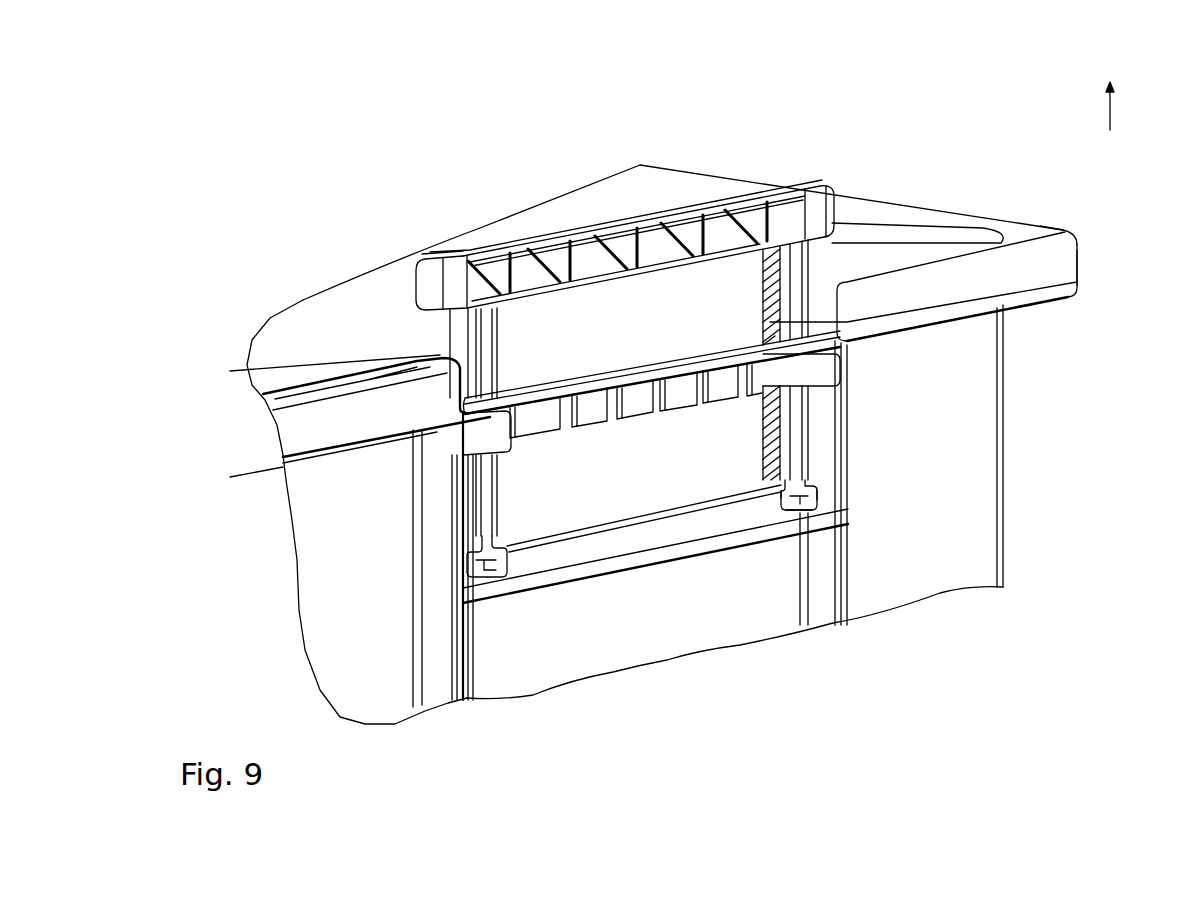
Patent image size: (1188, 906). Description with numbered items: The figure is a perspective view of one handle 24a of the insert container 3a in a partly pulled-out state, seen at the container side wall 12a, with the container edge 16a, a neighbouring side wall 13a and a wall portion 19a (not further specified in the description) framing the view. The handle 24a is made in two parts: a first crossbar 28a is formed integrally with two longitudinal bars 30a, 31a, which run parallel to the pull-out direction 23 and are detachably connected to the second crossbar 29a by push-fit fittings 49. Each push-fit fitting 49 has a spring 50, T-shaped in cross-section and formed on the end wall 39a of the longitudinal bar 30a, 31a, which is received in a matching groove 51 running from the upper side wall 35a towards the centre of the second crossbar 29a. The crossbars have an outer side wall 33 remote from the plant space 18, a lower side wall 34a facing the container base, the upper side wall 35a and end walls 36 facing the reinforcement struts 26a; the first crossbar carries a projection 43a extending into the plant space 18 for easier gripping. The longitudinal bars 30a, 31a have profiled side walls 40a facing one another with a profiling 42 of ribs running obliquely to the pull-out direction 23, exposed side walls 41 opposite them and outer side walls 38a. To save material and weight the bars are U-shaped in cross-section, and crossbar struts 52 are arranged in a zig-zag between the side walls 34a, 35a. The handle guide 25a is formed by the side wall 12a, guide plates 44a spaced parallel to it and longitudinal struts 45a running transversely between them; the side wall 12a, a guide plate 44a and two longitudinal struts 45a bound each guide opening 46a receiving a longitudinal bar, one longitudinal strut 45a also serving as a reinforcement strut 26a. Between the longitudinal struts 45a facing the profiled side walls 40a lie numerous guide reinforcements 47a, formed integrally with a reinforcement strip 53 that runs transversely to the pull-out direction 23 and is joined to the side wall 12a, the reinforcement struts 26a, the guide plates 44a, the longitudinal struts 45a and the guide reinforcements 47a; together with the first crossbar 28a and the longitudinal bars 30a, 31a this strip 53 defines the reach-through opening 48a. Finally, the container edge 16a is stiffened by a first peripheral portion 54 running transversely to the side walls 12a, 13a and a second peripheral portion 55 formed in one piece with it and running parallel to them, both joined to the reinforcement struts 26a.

The insert container 3a is at (705, 148).
The side wall of the container 12a is at (973, 530).
The side wall of the container 13a is at (552, 336).
The container edge 16a is at (1057, 262).
The plant space 18 is at (378, 317).
The housing wall 19a is at (1000, 400).
The pull-out direction 23 is at (1112, 108).
The handle 24a is at (521, 230).
The handle guide 25a is at (824, 373).
The reinforcement strut 26a is at (836, 626).
The first crossbar 28a is at (442, 255).
The second crossbar 29a is at (455, 590).
The longitudinal bar 30a is at (443, 328).
The longitudinal bar 31a is at (872, 214).
The outer side wall 33 is at (683, 230).
The lower side wall 34a is at (627, 230).
The upper side wall 35a is at (793, 188).
The end wall 36 is at (417, 293).
The outer side wall 38a is at (912, 223).
The end wall 39a is at (470, 562).
The profiled side wall 40a is at (1080, 289).
The exposed side wall 41 is at (470, 333).
The profiling 42 is at (783, 230).
The projection 43a is at (433, 280).
The guide plate 44a is at (493, 437).
The longitudinal strut 45a is at (770, 380).
The guide opening 46a is at (450, 364).
The guide reinforcement 47a is at (593, 380).
The reach-through opening 48a is at (540, 263).
The push-fit fitting 49 is at (832, 497).
The spring 50 is at (820, 488).
The groove 51 is at (822, 510).
The crossbar strut 52 is at (449, 246).
The reinforcement strip 53 is at (590, 420).
The first peripheral portion 54 is at (1050, 221).
The second peripheral portion 55 is at (1067, 273).